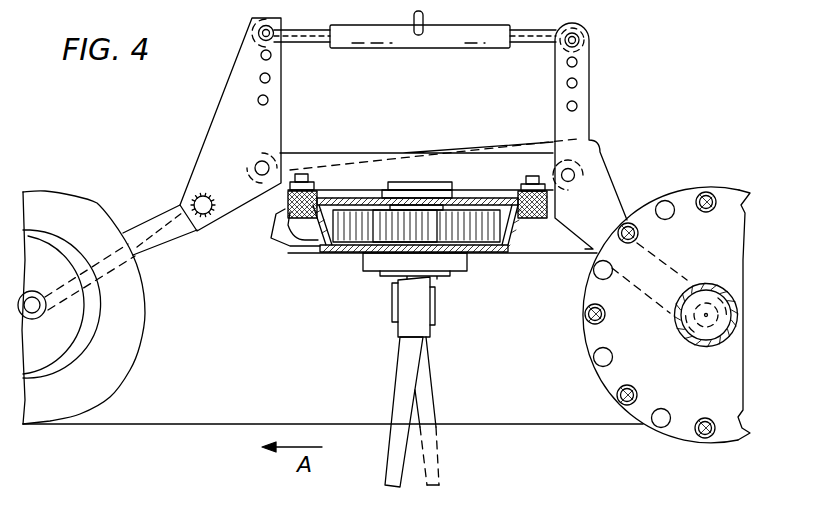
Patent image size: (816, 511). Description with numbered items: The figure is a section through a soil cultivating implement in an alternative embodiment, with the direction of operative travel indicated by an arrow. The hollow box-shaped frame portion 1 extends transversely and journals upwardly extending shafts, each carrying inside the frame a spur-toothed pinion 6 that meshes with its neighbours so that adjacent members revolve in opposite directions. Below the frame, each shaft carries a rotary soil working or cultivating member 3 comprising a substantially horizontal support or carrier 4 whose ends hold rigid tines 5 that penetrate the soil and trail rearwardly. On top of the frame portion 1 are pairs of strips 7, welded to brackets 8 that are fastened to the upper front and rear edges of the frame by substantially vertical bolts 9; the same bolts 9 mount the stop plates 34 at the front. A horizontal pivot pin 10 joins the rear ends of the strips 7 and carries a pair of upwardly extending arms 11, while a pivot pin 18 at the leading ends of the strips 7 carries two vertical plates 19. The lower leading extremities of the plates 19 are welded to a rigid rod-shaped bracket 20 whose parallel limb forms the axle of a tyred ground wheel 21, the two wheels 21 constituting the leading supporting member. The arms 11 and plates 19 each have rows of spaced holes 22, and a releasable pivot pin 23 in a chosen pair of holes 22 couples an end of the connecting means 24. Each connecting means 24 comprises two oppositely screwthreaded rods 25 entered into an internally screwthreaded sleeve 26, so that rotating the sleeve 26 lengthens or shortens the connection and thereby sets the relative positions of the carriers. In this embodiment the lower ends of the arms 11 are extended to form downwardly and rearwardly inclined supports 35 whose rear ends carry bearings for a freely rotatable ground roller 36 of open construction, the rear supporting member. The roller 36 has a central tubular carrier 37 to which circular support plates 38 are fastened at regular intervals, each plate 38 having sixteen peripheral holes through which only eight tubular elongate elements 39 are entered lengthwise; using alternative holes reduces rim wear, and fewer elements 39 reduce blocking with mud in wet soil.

The hollow box-shaped frame portion 1 is at (506, 253).
The rotary soil working or cultivating member 3 is at (400, 373).
The support or carrier 4 is at (424, 302).
The rigid tine 5 is at (412, 390).
The straight-toothed or spur-toothed pinion 6 is at (347, 237).
The strip 7 is at (339, 152).
The bracket 8 is at (315, 190).
The bolt 9 is at (309, 246).
The pivot pin 10 is at (575, 175).
The upwardly extending arm 11 is at (590, 118).
The pivot pin 18 is at (255, 166).
The plate 19 is at (219, 106).
The rod-shaped bracket 20 is at (150, 247).
The ground wheel 21 is at (78, 209).
The hole 22 is at (270, 79).
The releasable pivot pin 23 is at (264, 26).
The connecting means 24 is at (389, 27).
The screwthreaded rod 25 is at (303, 43).
The internally screwthreaded sleeve 26 is at (432, 45).
The stop plate 34 is at (276, 248).
The inclined support 35 is at (613, 217).
The ground roller 36 is at (583, 342).
The central tubular carrier 37 is at (681, 337).
The circular support plate 38 is at (605, 387).
The elongate element 39 is at (700, 418).